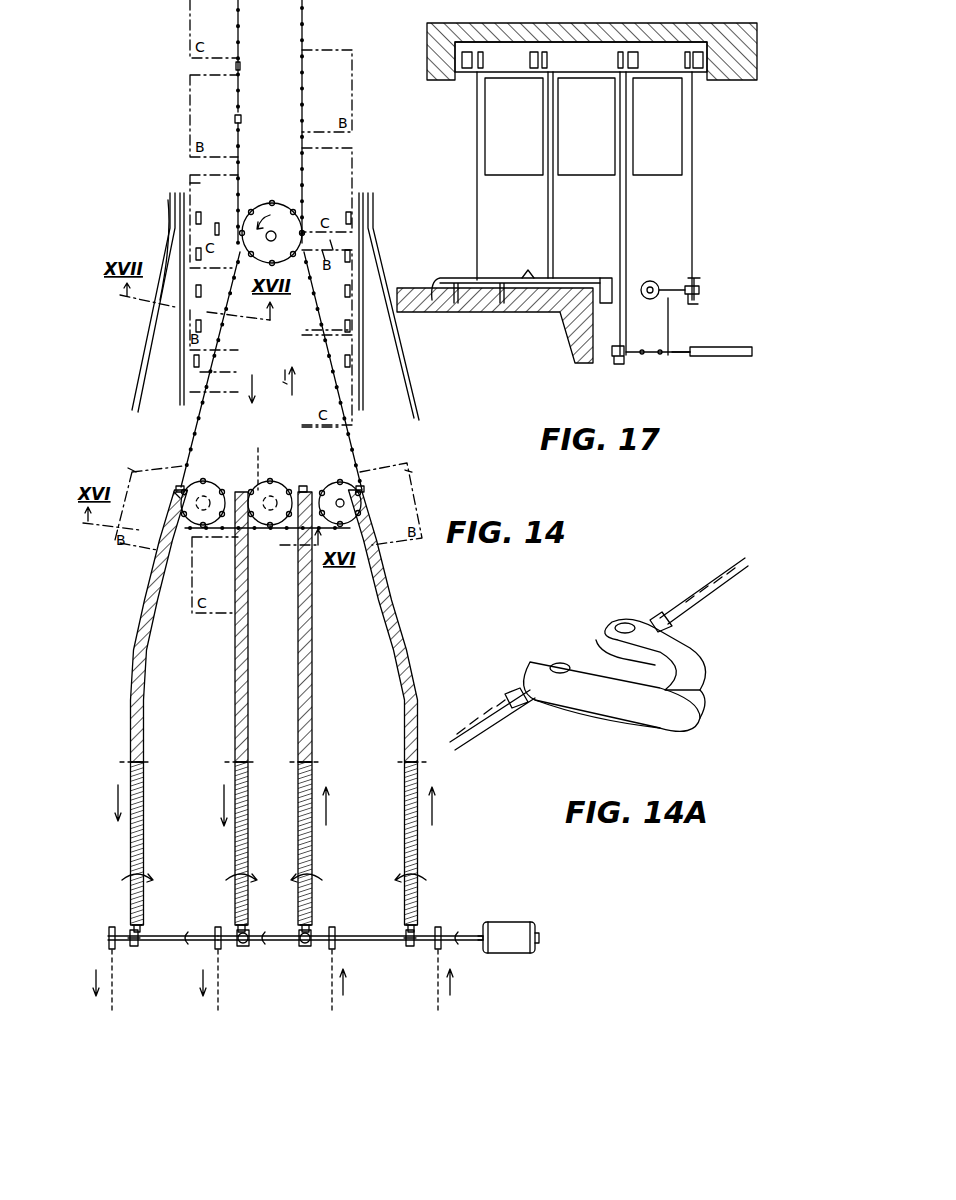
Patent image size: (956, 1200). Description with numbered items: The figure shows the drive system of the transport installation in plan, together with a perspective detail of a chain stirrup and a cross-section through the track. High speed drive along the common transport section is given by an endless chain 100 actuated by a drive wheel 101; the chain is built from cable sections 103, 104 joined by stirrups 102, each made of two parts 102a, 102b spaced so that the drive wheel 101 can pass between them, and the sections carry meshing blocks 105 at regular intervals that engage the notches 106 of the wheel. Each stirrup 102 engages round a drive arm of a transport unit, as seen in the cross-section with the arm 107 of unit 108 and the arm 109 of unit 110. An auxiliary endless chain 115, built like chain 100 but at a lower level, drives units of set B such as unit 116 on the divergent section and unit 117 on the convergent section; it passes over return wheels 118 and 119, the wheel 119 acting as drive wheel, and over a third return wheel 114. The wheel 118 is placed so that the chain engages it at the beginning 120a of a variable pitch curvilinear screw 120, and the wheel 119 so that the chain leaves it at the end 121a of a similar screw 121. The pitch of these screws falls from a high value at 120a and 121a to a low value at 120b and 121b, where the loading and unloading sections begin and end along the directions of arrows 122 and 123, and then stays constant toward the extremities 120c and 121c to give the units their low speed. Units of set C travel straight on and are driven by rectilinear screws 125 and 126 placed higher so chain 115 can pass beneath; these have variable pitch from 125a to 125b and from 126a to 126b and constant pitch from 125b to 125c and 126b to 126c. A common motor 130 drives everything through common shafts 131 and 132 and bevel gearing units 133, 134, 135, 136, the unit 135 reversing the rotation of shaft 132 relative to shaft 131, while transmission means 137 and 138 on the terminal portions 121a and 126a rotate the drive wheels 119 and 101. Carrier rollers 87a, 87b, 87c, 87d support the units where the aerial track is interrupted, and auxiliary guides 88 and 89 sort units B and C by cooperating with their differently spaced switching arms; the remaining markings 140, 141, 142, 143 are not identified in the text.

In FIG. 14, the carrier rollers 87a is at (322, 268).
In FIG. 14, the carrier rollers 87b is at (215, 226).
In FIG. 17, the carrier rollers 87b is at (606, 278).
In FIG. 14, the carrier rollers 87c is at (348, 318).
In FIG. 14, the carrier rollers 87d is at (198, 362).
In FIG. 17, the carrier rollers 87d is at (528, 270).
In FIG. 14, the auxiliary guides 88 is at (135, 403).
In FIG. 17, the auxiliary guides 88 is at (440, 306).
In FIG. 14, the auxiliary guides 89 is at (184, 404).
In FIG. 17, the auxiliary guides 89 is at (505, 282).
In FIG. 14, the endless chain 100 is at (303, 27).
In FIG. 17, the endless chain 100 is at (669, 305).
In FIG. 14, the drive wheel 101 is at (272, 527).
In FIG. 14, the stirrups 102 is at (238, 118).
In FIG. 17, the stirrups 102 is at (698, 294).
In FIG. 14A, the stirrups 102 is at (560, 648).
In FIG. 14A, the stirrup part 102a is at (685, 646).
In FIG. 14A, the stirrup part 102b is at (660, 722).
In FIG. 14, the cable section 103 is at (238, 130).
In FIG. 14A, the cable section 103 is at (476, 726).
In FIG. 14, the cable section 104 is at (238, 104).
In FIG. 14A, the cable section 104 is at (682, 602).
In FIG. 14, the meshing blocks 105 is at (238, 70).
In FIG. 17, the meshing blocks 105 is at (644, 356).
In FIG. 14, the notches 106 is at (296, 392).
In FIG. 17, the drive arm 107 is at (700, 282).
In FIG. 14, the transport unit 108 is at (188, 184).
In FIG. 17, the transport unit 108 is at (695, 212).
In FIG. 17, the drive arm 109 is at (626, 330).
In FIG. 14, the transport unit 110 is at (152, 327).
In FIG. 17, the transport unit 110 is at (477, 210).
In FIG. 14, the return wheel 114 is at (270, 205).
In FIG. 17, the return wheel 114 is at (722, 357).
In FIG. 17, the auxiliary endless chain 115 is at (680, 356).
In FIG. 14, the unit 116 is at (410, 470).
In FIG. 14, the unit 117 is at (130, 470).
In FIG. 14, the return wheel 118 is at (354, 502).
In FIG. 14, the return wheel 119 is at (208, 532).
In FIG. 14, the variable pitch curvilinear screw 120 is at (396, 600).
In FIG. 14, the beginning of screw 120a is at (362, 485).
In FIG. 14, the low pitch location 120b is at (420, 762).
In FIG. 14, the extremity of screw 120c is at (420, 922).
In FIG. 14, the variable pitch curvilinear screw 121 is at (150, 600).
In FIG. 14, the end of screw 121a is at (176, 495).
In FIG. 14, the low pitch location 121b is at (128, 762).
In FIG. 14, the extremity of screw 121c is at (130, 922).
In FIG. 14, the arrow 122 is at (434, 808).
In FIG. 14, the arrow 123 is at (117, 786).
In FIG. 14, the rectilinear screw 125 is at (312, 662).
In FIG. 14, the screw position 125a is at (303, 486).
In FIG. 14, the screw position 125b is at (312, 762).
In FIG. 14, the screw position 125c is at (312, 922).
In FIG. 14, the rectilinear screw 126 is at (235, 662).
In FIG. 14, the terminal portion of screw 126a is at (222, 488).
In FIG. 14, the screw position 126b is at (233, 762).
In FIG. 14, the screw position 126c is at (236, 922).
In FIG. 14, the common motor 130 is at (512, 955).
In FIG. 14, the common shaft 131 is at (368, 940).
In FIG. 14, the common shaft 132 is at (178, 940).
In FIG. 14, the bevel gearing unit 133 is at (411, 946).
In FIG. 14, the bevel gearing unit 134 is at (305, 946).
In FIG. 14, the bevel gearing unit 135 is at (243, 946).
In FIG. 14, the bevel gearing unit 136 is at (134, 946).
In FIG. 14, the transmission means 137 is at (183, 472).
In FIG. 14, the transmission means 138 is at (287, 482).
In FIG. 14, the motion arrow 140 is at (439, 1003).
In FIG. 14, the motion arrow 141 is at (333, 1003).
In FIG. 14, the motion arrow 142 is at (219, 1003).
In FIG. 14, the motion arrow 143 is at (113, 1003).